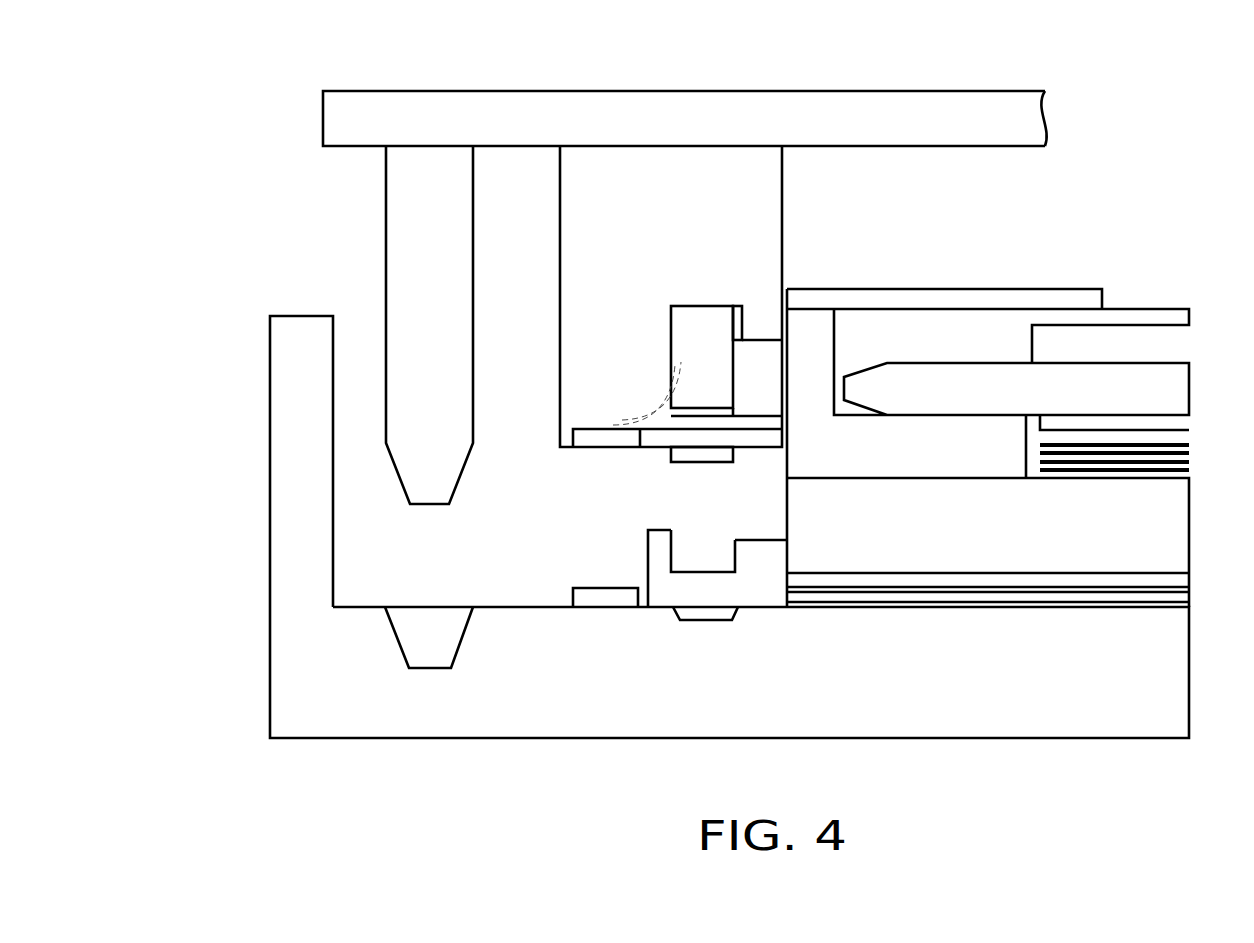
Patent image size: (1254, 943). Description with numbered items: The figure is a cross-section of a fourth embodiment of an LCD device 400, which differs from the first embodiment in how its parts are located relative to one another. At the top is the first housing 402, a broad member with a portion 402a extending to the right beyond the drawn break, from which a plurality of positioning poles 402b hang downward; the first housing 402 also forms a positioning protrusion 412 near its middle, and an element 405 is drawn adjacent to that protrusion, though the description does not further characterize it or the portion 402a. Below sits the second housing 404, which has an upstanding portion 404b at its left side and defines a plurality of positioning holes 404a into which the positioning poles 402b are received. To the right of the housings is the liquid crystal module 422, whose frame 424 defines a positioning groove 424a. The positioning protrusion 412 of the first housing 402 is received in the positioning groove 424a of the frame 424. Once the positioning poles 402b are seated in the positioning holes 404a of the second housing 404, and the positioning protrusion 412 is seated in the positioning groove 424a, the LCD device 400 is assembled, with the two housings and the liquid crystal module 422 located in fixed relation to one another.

The LCD device 400 is at (681, 401).
The first housing 402 is at (429, 105).
The upper portion of first member 402a is at (1131, 120).
The positioning poles 402b is at (395, 293).
The second housing 404 is at (280, 675).
The positioning holes 404a is at (427, 615).
The side wall of second member 404b is at (285, 449).
The clamp block 405 is at (705, 306).
The positioning protrusion 412 is at (690, 457).
The liquid crystal module 422 is at (1128, 262).
The frame 424 is at (762, 585).
The positioning groove 424a is at (702, 568).